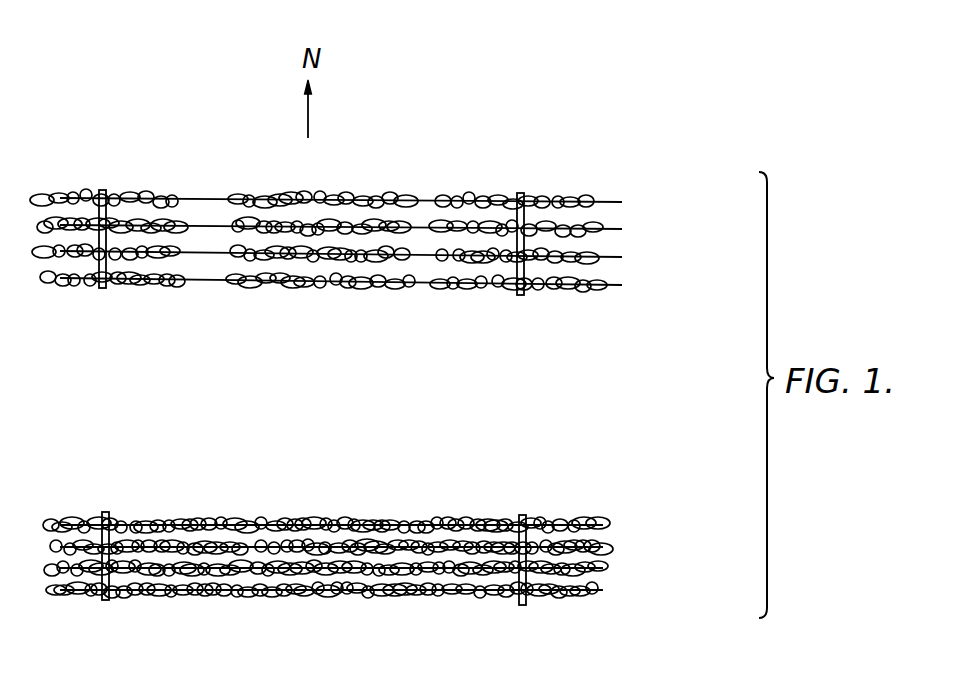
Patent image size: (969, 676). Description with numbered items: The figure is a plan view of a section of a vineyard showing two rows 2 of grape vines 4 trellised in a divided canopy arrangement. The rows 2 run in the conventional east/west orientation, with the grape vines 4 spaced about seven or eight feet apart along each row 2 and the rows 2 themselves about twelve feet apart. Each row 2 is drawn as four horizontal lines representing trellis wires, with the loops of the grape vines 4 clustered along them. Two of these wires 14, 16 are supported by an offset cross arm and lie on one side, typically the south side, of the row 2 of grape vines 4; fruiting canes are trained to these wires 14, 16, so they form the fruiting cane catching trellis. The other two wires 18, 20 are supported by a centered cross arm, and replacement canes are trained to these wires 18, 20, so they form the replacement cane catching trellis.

The row 2 is at (368, 390).
The grape vine 4 is at (355, 190).
The wire 14 is at (220, 590).
The wire 16 is at (432, 568).
The wire 18 is at (212, 547).
The wire 20 is at (242, 525).